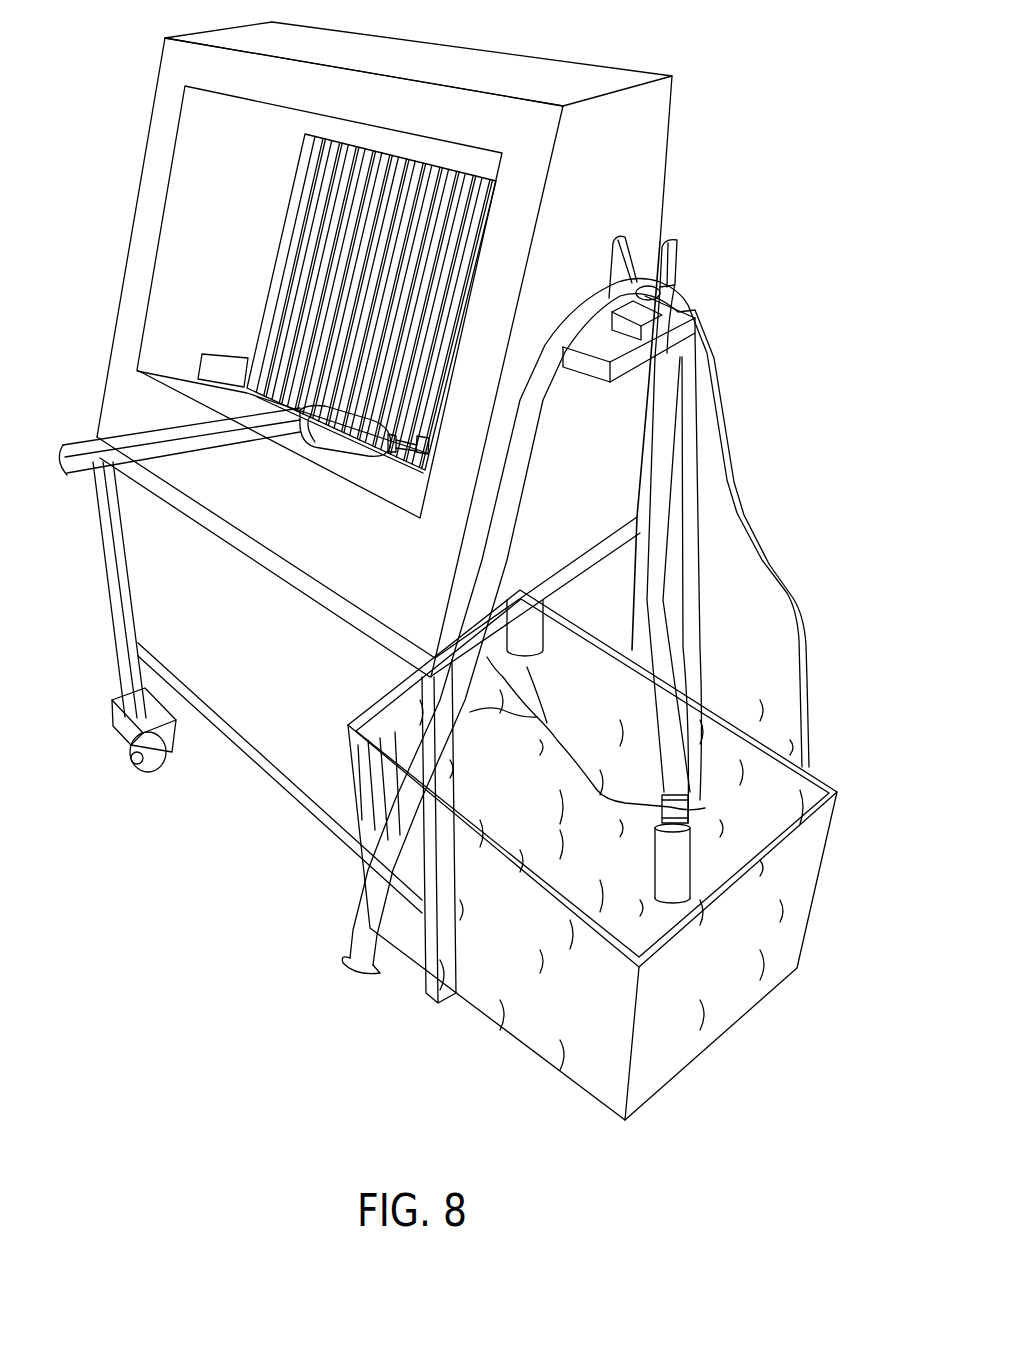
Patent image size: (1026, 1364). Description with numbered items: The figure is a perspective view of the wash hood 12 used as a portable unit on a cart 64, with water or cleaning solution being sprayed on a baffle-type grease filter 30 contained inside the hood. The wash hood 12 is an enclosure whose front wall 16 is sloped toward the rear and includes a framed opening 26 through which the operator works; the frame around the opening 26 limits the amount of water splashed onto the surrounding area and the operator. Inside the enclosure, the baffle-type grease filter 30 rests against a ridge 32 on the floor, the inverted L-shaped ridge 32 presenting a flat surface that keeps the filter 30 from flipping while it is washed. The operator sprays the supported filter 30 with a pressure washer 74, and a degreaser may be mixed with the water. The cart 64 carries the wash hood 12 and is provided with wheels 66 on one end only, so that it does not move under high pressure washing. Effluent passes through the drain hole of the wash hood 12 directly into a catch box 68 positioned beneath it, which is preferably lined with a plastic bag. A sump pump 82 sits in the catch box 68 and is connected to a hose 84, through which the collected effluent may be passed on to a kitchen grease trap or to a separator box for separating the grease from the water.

The wash hood 12 is at (426, 512).
The front wall 16 is at (139, 207).
The framed opening 26 is at (162, 228).
The baffle-type grease filter 30 is at (280, 270).
The ridge 32 is at (218, 368).
The cart 64 is at (96, 606).
The wheel 66 is at (152, 772).
The catch box 68 is at (848, 850).
The pressure washer 74 is at (345, 433).
The sump pump 82 is at (728, 870).
The hose 84 is at (713, 577).